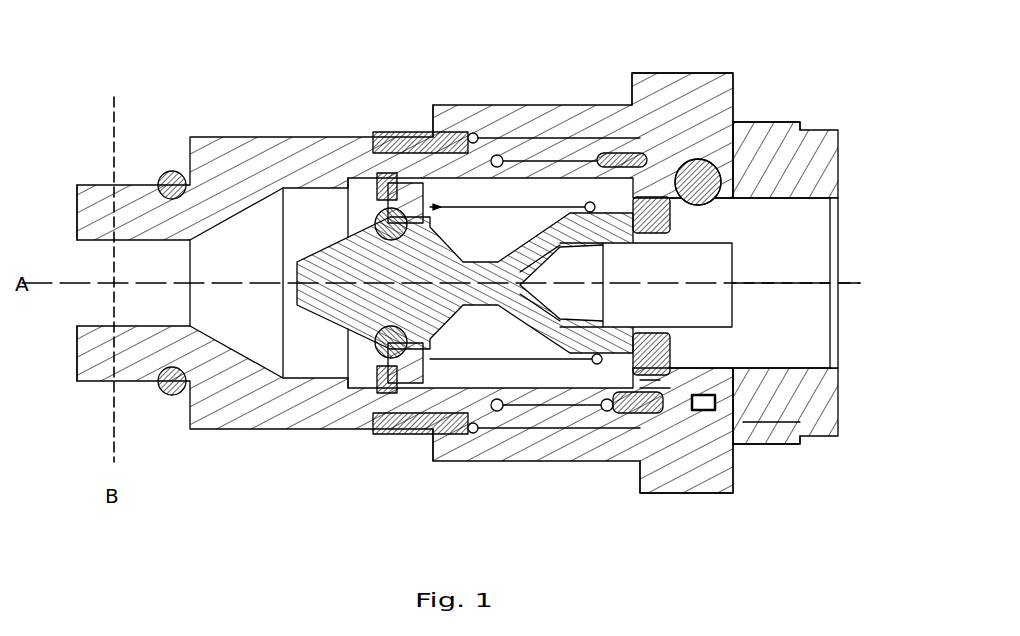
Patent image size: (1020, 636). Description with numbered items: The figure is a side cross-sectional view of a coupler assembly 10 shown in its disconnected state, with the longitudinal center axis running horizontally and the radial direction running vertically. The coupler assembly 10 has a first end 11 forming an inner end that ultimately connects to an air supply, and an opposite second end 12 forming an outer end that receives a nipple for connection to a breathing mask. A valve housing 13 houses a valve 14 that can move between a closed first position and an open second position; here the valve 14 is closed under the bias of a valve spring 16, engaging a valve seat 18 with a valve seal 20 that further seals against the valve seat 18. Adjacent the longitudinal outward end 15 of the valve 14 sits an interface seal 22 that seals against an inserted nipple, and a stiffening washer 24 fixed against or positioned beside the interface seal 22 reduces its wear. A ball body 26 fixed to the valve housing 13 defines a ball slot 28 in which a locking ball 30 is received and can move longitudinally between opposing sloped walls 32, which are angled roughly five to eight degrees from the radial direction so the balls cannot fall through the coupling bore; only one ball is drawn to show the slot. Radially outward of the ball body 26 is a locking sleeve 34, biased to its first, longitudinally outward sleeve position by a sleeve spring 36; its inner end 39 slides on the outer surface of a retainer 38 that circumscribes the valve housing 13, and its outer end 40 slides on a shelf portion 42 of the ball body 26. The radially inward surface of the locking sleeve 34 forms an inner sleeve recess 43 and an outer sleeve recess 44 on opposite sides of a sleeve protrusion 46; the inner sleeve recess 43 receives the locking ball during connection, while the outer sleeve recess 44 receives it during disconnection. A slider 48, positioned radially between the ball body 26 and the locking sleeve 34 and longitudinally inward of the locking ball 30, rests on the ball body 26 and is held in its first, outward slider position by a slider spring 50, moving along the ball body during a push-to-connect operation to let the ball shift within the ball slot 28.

The coupler assembly 10 is at (160, 97).
The first end 11 is at (76, 258).
The second end 12 is at (838, 232).
The valve housing 13 is at (76, 345).
The valve 14 is at (340, 330).
The longitudinal outward end 15 is at (738, 266).
The valve spring 16 is at (402, 133).
The valve seat 18 is at (383, 190).
The valve seal 20 is at (378, 214).
The interface seal 22 is at (641, 196).
The stiffening washer 24 is at (672, 355).
The ball body 26 is at (810, 147).
The ball slot 28 is at (690, 368).
The locking ball 30 is at (696, 160).
The sloped walls 32 is at (655, 375).
The locking sleeve 34 is at (643, 82).
The sleeve spring 36 is at (497, 140).
The retainer 38 is at (377, 131).
The inner end 39 is at (445, 205).
The outer end 40 is at (766, 120).
The shelf portion 42 is at (767, 423).
The inner sleeve recess 43 is at (648, 378).
The outer sleeve recess 44 is at (725, 407).
The sleeve protrusion 46 is at (702, 410).
The slider 48 is at (623, 152).
The slider spring 50 is at (520, 158).